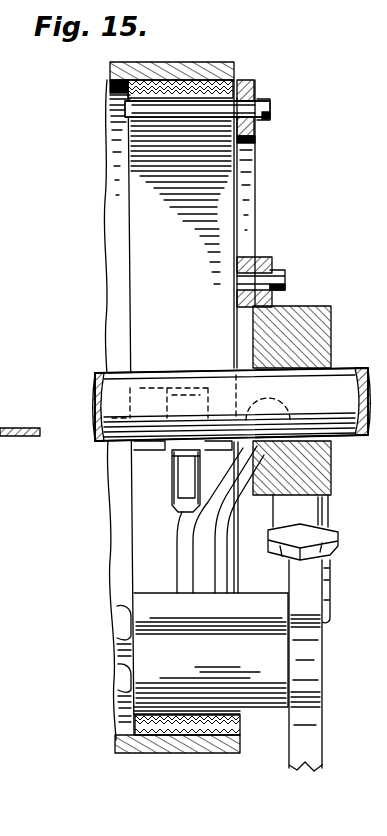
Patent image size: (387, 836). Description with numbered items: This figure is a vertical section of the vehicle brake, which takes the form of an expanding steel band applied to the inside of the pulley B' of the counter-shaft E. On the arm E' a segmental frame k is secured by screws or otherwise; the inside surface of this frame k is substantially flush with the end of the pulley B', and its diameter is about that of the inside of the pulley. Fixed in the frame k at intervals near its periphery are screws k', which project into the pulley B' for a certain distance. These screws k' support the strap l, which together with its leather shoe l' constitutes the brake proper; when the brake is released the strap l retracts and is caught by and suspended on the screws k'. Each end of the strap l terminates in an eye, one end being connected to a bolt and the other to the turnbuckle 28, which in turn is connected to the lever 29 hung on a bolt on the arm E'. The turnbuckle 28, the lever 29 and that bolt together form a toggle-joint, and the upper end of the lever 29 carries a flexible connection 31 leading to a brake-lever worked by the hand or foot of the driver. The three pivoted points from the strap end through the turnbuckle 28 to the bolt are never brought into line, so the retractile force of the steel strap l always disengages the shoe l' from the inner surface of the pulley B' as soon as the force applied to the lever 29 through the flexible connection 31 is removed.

The pulley B' is at (148, 414).
The leather shoe l' is at (140, 405).
The strap l is at (144, 405).
The screws k' is at (197, 191).
The segmental frame k is at (259, 336).
The arm E' is at (300, 545).
The counter-shaft E is at (232, 404).
The flexible connection 31 is at (40, 424).
The turnbuckle 28 is at (184, 477).
The lever 29 is at (184, 563).